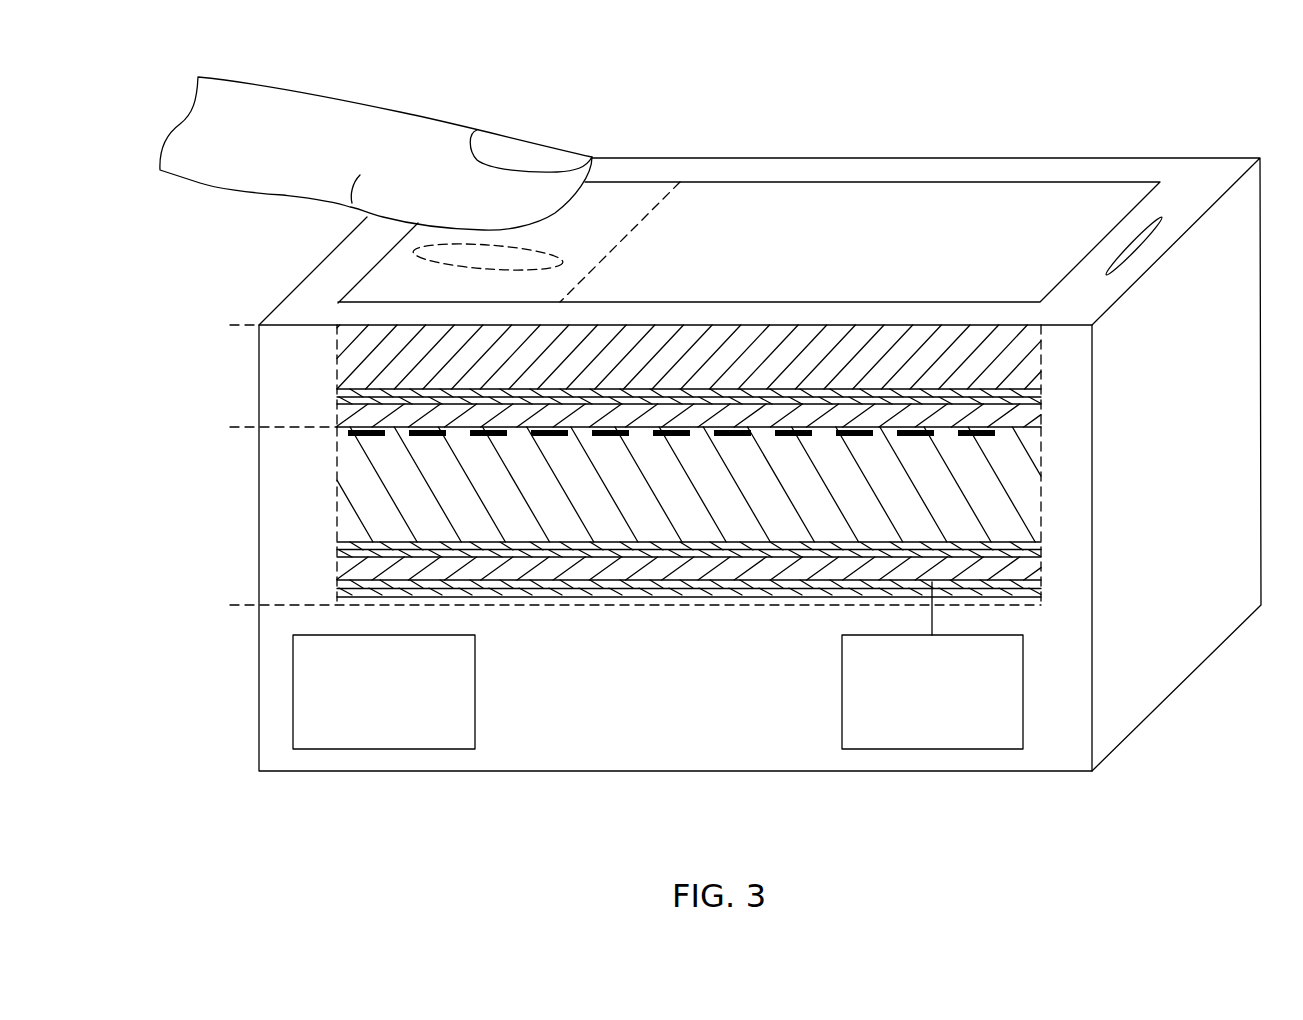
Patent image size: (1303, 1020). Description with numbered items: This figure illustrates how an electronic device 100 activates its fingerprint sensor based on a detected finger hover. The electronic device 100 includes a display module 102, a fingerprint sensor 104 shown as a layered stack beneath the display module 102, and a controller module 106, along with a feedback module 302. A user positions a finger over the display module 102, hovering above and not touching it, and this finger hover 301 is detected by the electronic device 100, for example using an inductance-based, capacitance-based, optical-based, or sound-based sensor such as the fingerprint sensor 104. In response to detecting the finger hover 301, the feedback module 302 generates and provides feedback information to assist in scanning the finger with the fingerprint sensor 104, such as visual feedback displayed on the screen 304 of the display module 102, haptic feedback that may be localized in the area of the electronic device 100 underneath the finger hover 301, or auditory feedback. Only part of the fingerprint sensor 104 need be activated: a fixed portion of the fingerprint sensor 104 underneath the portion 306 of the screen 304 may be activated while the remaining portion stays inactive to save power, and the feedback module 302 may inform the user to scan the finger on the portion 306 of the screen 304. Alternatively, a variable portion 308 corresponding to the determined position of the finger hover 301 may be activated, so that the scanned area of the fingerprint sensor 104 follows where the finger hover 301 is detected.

The electronic device 100 is at (377, 65).
The finger hover 301 is at (506, 133).
The screen 304 is at (1087, 180).
The portion 306 is at (627, 190).
The variable portion 308 is at (413, 257).
The display module 102 is at (220, 325).
The fingerprint sensor 104 is at (220, 427).
The feedback module 302 is at (335, 752).
The controller module 106 is at (880, 751).